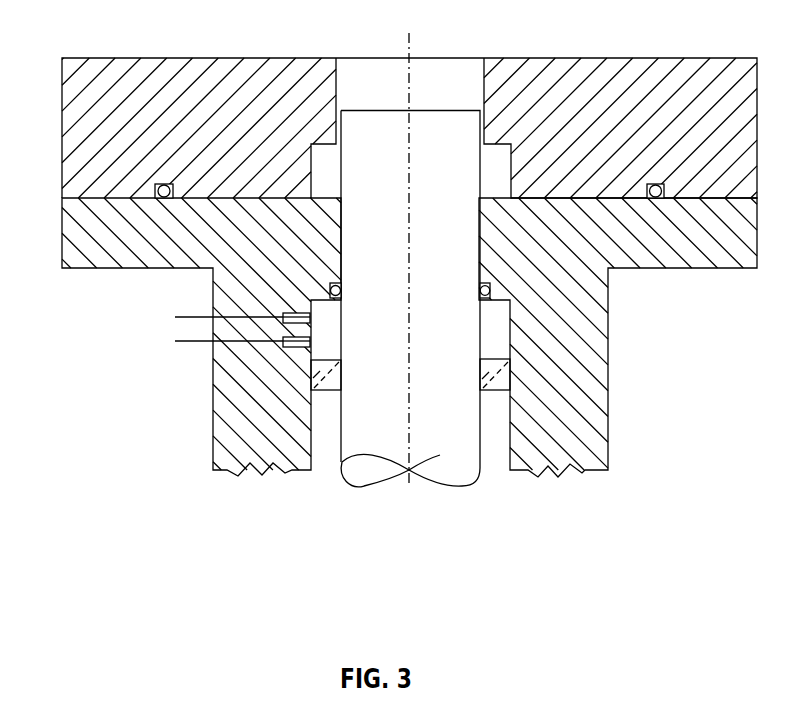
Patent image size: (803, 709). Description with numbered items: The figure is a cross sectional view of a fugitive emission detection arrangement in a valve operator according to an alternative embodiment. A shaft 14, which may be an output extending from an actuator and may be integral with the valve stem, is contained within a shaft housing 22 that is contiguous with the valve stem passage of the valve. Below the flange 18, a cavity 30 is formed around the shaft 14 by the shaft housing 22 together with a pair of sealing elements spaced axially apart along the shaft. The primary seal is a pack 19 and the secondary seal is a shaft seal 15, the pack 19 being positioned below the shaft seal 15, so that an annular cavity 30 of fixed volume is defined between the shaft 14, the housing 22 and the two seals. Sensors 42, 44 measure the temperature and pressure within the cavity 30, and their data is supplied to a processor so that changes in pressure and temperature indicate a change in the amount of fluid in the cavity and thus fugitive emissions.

The shaft 14 is at (447, 470).
The shaft seal 15 is at (493, 288).
The flange 18 is at (78, 235).
The pack 19 is at (510, 375).
The shaft housing 22 is at (587, 384).
The cavity 30 is at (333, 354).
The sensor 42 is at (283, 313).
The sensor 44 is at (313, 358).